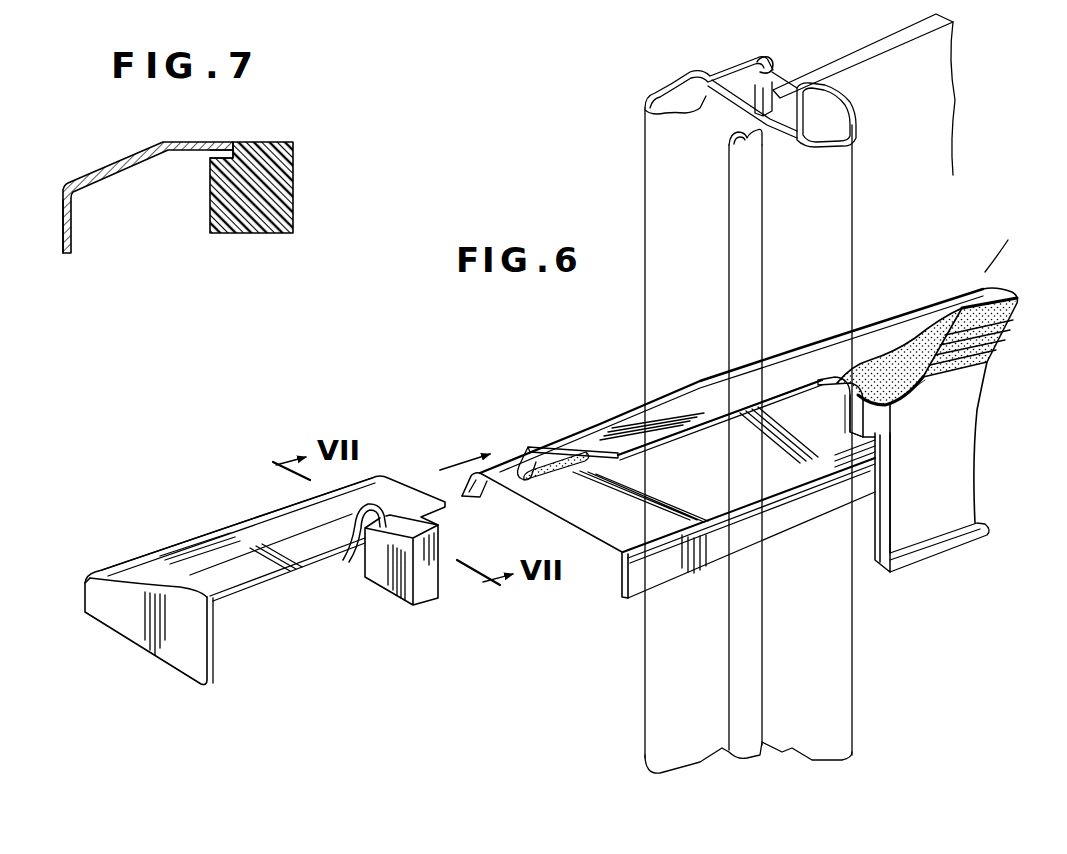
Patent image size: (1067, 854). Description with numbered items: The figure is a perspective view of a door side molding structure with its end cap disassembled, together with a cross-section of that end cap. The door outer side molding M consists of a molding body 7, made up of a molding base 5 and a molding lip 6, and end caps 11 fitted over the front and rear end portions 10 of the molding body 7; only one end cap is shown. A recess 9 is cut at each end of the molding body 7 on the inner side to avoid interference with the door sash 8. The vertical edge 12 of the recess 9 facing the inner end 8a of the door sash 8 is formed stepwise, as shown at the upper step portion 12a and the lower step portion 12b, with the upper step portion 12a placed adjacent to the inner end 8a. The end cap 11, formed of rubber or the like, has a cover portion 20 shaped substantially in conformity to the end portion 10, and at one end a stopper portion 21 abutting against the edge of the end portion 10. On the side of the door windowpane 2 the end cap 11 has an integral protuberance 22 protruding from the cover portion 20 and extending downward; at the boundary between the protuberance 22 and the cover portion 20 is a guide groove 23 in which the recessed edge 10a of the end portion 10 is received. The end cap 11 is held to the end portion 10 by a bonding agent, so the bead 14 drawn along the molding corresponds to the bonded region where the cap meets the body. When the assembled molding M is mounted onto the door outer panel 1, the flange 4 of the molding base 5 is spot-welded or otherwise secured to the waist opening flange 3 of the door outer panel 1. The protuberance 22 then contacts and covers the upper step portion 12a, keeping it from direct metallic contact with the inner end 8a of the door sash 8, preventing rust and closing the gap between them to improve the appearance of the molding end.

In FIG. 6, the door outer panel 1 is at (553, 527).
In FIG. 6, the door windowpane 2 is at (960, 85).
In FIG. 6, the waist opening flange 3 is at (618, 572).
In FIG. 6, the flange 4 is at (877, 547).
In FIG. 6, the molding base 5 is at (907, 323).
In FIG. 6, the molding lip 6 is at (1012, 322).
In FIG. 6, the molding body 7 is at (955, 484).
In FIG. 6, the door sash 8 is at (655, 100).
In FIG. 6, the inner end of door sash 8a is at (778, 62).
In FIG. 6, the recess 9 is at (740, 426).
In FIG. 6, the end portion 10 is at (603, 428).
In FIG. 6, the recessed edge 10a is at (683, 430).
In FIG. 7, the end cap 11 is at (72, 178).
In FIG. 6, the end cap 11 is at (213, 523).
In FIG. 6, the vertical edge 12 is at (837, 372).
In FIG. 6, the upper step portion 12a is at (843, 422).
In FIG. 6, the lower step portion 12b is at (870, 497).
In FIG. 6, the adhesive bead 14 is at (527, 483).
In FIG. 7, the cover portion 20 is at (122, 161).
In FIG. 6, the cover portion 20 is at (182, 552).
In FIG. 6, the stopper portion 21 is at (155, 650).
In FIG. 7, the protuberance 22 is at (289, 192).
In FIG. 6, the protuberance 22 is at (403, 595).
In FIG. 7, the guide groove 23 is at (213, 155).
In FIG. 6, the guide groove 23 is at (349, 557).
In FIG. 6, the door outer side molding M is at (1002, 244).